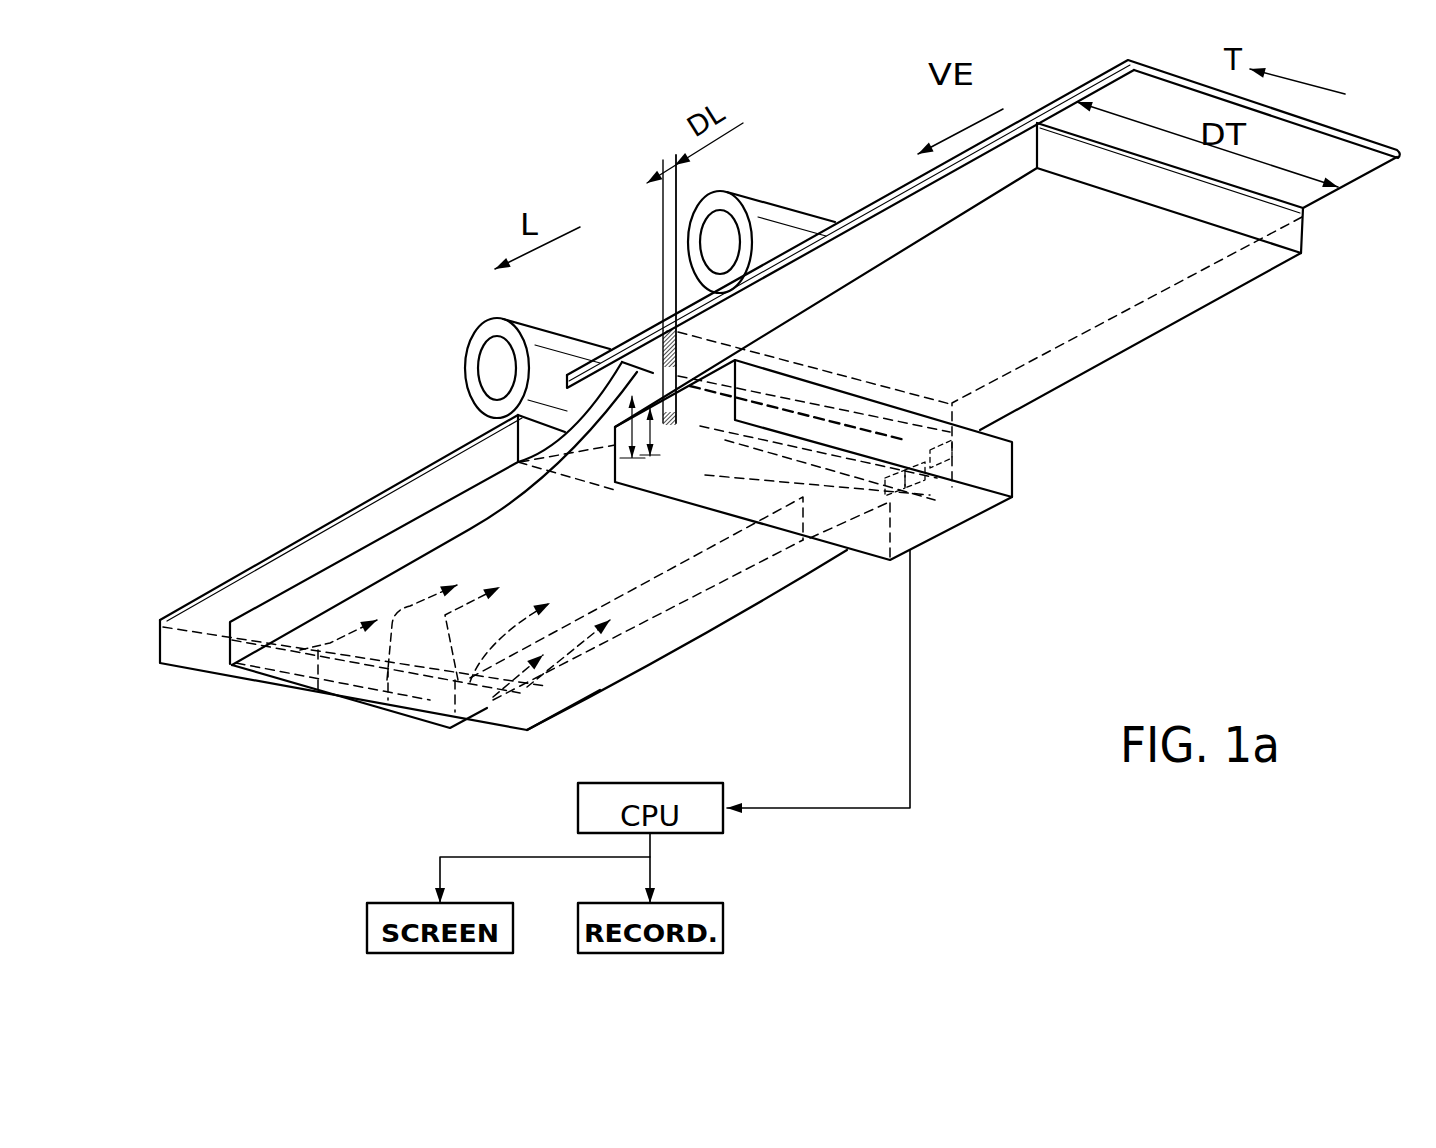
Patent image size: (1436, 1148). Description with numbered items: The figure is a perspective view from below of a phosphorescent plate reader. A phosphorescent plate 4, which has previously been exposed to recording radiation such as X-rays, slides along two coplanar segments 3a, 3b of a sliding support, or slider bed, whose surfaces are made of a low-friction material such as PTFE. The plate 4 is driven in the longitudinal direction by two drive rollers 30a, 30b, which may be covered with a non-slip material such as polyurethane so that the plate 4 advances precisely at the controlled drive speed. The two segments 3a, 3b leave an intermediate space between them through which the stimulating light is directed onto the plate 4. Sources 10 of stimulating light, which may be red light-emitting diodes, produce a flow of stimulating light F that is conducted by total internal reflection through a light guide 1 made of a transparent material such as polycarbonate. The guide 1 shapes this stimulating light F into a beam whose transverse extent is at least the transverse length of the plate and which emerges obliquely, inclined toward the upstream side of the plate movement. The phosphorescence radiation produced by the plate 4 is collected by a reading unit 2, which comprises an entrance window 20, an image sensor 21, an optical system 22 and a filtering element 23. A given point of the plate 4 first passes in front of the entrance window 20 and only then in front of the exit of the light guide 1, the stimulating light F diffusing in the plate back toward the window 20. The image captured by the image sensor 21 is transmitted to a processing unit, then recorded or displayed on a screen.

The light guide 1 is at (672, 648).
The reading unit 2 is at (1080, 577).
The segment of a sliding support, or slider bed 3a is at (1250, 263).
The segment of a sliding support, or slider bed 3b is at (202, 670).
The phosphorescent plate 4 is at (1362, 163).
The sources of stimulating light 10 is at (320, 697).
The entrance window of the reading unit 20 is at (840, 352).
The image sensor 21 is at (933, 527).
The optical system 22 is at (1020, 500).
The filtering element 23 is at (948, 500).
The drive roller 30a is at (746, 196).
The drive roller 30b is at (470, 357).
The stimulating light F is at (493, 707).